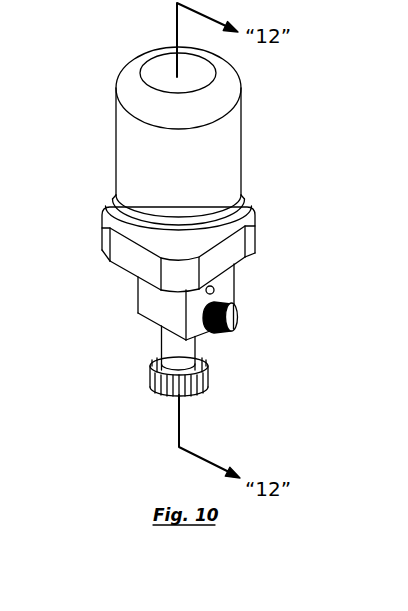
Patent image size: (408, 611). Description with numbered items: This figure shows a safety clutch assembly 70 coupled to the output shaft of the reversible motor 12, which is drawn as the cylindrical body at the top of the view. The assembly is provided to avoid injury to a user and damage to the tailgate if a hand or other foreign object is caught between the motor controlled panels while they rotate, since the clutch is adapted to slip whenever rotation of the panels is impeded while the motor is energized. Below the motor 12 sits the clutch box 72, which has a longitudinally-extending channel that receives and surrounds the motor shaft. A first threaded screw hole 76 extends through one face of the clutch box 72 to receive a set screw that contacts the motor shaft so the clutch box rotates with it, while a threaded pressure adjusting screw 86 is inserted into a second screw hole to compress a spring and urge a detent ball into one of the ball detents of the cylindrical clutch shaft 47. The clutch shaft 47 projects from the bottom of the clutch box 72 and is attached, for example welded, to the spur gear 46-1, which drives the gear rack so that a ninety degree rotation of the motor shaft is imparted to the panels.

The reversible motor 12 is at (225, 163).
The clutch box 72 is at (155, 297).
The first threaded screw hole 76 is at (218, 285).
The threaded pressure adjusting screw 86 is at (236, 316).
The safety clutch assembly 70 is at (253, 347).
The clutch shaft 47 is at (168, 352).
The spur gear 46-1 is at (205, 388).